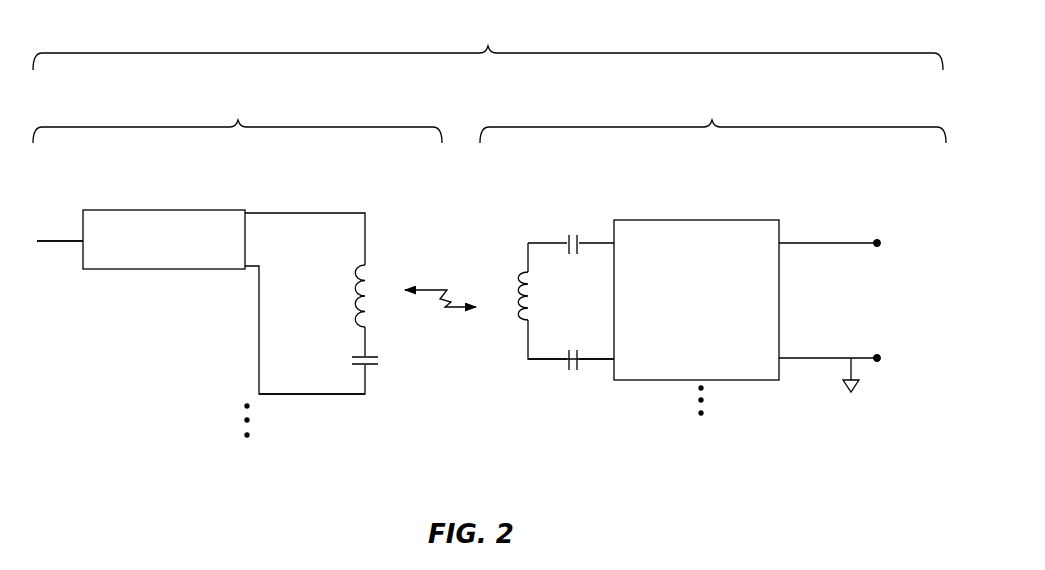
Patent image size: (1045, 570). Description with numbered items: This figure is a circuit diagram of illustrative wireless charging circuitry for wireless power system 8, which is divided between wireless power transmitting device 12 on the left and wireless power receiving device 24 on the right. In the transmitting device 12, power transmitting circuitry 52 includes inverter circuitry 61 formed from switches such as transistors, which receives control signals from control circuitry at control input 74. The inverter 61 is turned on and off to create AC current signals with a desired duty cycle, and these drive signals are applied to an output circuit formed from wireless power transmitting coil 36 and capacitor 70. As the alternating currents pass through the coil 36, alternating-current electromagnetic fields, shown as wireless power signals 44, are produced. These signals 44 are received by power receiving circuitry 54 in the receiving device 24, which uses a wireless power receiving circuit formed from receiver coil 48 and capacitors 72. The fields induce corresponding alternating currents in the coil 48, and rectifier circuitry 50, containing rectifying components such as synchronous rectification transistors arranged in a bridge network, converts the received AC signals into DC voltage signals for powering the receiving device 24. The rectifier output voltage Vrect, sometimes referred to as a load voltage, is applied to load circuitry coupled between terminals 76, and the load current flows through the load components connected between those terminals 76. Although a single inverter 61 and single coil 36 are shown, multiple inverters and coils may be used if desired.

The wireless power system 8 is at (488, 47).
The wireless power transmitting device 12 is at (237, 267).
The wireless power receiving device 24 is at (713, 256).
The control input 74 is at (55, 240).
The inverter circuitry 61 is at (165, 220).
The wireless power transmitting coil 36 is at (374, 264).
The capacitor 70 is at (385, 367).
The power transmitting circuitry 52 is at (206, 377).
The wireless power signals 44 is at (441, 312).
The rectifier circuitry 50 is at (690, 225).
The capacitor 72 is at (577, 220).
The receiver coil 48 is at (521, 328).
The power receiving circuitry 54 is at (651, 422).
The terminals 76 is at (881, 355).